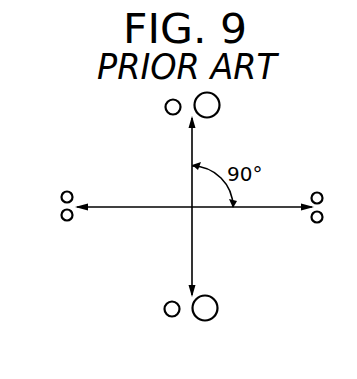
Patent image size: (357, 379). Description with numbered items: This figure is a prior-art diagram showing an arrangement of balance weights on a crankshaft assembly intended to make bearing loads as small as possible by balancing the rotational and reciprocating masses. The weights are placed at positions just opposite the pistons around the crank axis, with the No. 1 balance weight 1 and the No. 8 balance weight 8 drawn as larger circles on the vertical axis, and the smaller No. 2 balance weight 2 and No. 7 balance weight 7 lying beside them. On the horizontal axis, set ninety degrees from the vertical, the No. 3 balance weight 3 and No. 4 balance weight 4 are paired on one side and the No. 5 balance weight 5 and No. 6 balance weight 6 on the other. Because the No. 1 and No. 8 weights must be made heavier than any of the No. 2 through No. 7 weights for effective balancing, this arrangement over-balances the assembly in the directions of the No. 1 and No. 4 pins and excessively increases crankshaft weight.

The No. 1 balance weight 1 is at (218, 306).
The No. 2 balance weight 2 is at (164, 310).
The No. 3 balance weight 3 is at (69, 221).
The No. 4 balance weight 4 is at (72, 193).
The No. 5 balance weight 5 is at (317, 223).
The No. 6 balance weight 6 is at (317, 191).
The No. 7 balance weight 7 is at (165, 107).
The No. 8 balance weight 8 is at (220, 104).